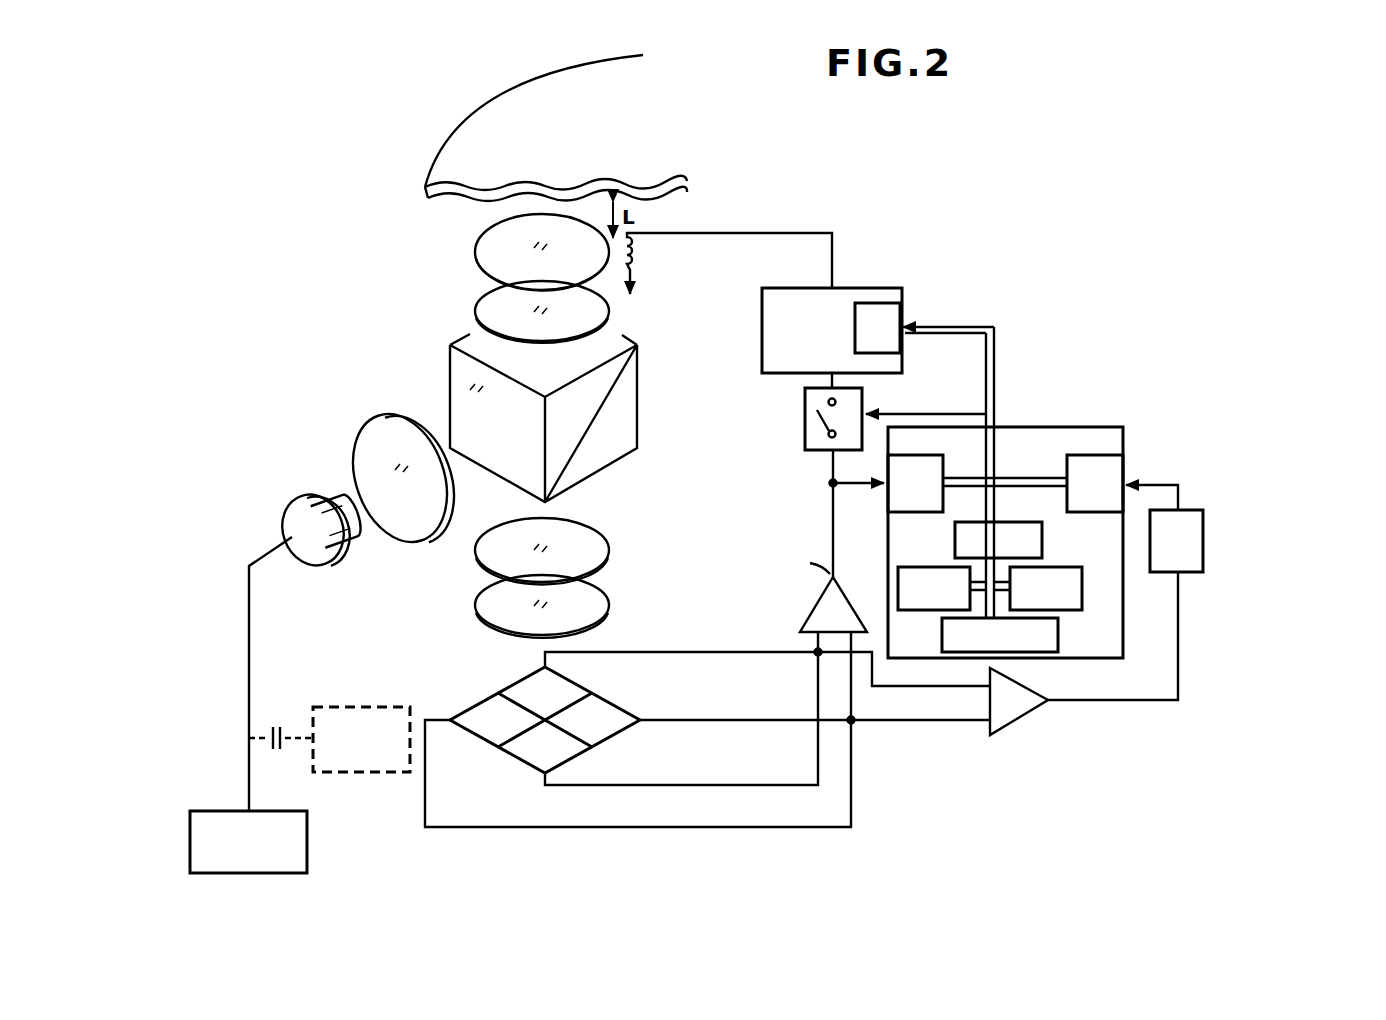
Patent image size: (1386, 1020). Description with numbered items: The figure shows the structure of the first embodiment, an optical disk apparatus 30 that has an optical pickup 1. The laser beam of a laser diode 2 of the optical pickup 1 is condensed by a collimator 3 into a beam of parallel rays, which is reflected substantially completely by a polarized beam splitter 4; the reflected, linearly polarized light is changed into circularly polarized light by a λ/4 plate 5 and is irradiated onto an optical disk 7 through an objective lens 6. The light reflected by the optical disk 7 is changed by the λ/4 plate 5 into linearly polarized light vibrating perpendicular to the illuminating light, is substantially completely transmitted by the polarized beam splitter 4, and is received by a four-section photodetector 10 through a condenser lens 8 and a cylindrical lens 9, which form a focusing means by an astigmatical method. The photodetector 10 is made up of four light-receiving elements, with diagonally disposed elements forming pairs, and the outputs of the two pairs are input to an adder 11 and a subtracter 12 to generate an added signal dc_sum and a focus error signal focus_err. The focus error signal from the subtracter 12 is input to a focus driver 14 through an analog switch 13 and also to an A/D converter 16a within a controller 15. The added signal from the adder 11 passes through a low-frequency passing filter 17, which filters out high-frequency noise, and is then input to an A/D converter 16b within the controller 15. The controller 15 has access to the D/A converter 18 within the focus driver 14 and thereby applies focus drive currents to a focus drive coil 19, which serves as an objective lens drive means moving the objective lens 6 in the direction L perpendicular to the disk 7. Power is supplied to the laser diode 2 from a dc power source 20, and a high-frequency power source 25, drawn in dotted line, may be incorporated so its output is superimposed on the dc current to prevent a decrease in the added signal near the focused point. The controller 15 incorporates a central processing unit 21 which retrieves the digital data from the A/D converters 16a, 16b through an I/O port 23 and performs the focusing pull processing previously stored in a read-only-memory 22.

The optical pickup 1 is at (372, 357).
The laser diode 2 is at (308, 547).
The collimator 3 is at (355, 440).
The polarized beam splitter 4 is at (594, 466).
The λ/4 plate 5 is at (598, 318).
The objective lens 6 is at (477, 245).
The optical disk 7 is at (648, 124).
The condenser lens 8 is at (608, 565).
The cylindrical lens 9 is at (605, 618).
The four-section photodetector 10 is at (455, 705).
The adder 11 is at (1018, 715).
The subtracter 12 is at (818, 612).
The analog switch 13 is at (805, 437).
The focus driver 14 is at (868, 282).
The controller 15 is at (1023, 493).
The A/D converter 16a is at (887, 498).
The A/D converter 16b is at (1124, 462).
The low-frequency passing filter 17 is at (1190, 573).
The D/A converter 18 is at (905, 306).
The focus drive coil 19 is at (639, 251).
The dc power source 20 is at (265, 875).
The central processing unit 21 is at (1068, 611).
The read-only-memory 22 is at (917, 610).
The I/O port 23 is at (1043, 540).
The high-frequency power source 25 is at (345, 773).
The optical disk apparatus 30 is at (882, 785).